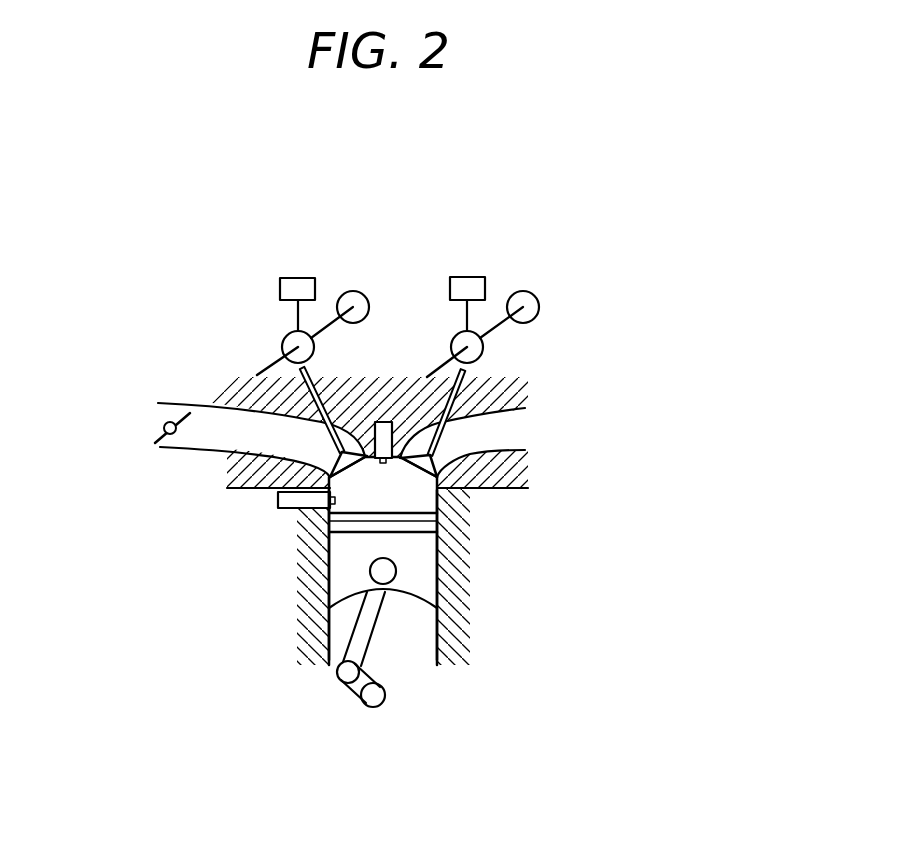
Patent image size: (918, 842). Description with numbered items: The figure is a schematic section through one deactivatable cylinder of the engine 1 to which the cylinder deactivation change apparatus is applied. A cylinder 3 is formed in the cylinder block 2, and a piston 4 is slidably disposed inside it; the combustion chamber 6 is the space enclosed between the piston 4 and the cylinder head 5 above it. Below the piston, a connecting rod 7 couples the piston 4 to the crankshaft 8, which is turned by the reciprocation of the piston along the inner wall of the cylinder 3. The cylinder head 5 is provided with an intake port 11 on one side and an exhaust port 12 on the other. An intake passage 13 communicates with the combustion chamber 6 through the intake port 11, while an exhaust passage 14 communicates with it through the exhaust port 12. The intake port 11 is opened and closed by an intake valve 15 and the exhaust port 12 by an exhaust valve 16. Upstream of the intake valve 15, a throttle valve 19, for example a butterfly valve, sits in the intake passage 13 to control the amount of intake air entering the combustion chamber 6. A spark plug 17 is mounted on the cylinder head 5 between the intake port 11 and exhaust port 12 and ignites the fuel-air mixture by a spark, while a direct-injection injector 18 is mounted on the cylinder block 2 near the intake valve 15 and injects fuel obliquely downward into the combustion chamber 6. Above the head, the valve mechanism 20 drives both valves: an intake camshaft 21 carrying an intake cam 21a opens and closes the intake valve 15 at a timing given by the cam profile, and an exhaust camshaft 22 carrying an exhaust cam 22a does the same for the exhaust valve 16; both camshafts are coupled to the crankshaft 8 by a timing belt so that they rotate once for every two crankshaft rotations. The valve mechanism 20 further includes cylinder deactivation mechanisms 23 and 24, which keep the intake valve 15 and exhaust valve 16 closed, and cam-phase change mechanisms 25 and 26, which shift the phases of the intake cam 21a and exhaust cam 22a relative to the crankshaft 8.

The engine 1 is at (598, 170).
The cylinder block 2 is at (302, 590).
The cylinder 3 is at (422, 563).
The piston 4 is at (420, 582).
The cylinder head 5 is at (242, 472).
The combustion chamber 6 is at (412, 497).
The connecting rod 7 is at (370, 643).
The crankshaft 8 is at (362, 702).
The intake port 11 is at (330, 454).
The exhaust port 12 is at (440, 460).
The intake passage 13 is at (240, 423).
The exhaust passage 14 is at (483, 443).
The intake valve 15 is at (332, 448).
The exhaust valve 16 is at (438, 440).
The spark plug 17 is at (380, 421).
The direct-injection injector 18 is at (287, 508).
The throttle valve 19 is at (157, 440).
The valve mechanism 20 is at (499, 200).
The intake camshaft 21 is at (262, 362).
The intake cam 21a is at (287, 332).
The exhaust camshaft 22 is at (485, 337).
The exhaust cam 22a is at (485, 355).
The cylinder deactivation mechanism 23 is at (298, 278).
The cylinder deactivation mechanism 24 is at (470, 277).
The cam-phase change mechanism 25 is at (355, 290).
The cam-phase change mechanism 26 is at (526, 290).